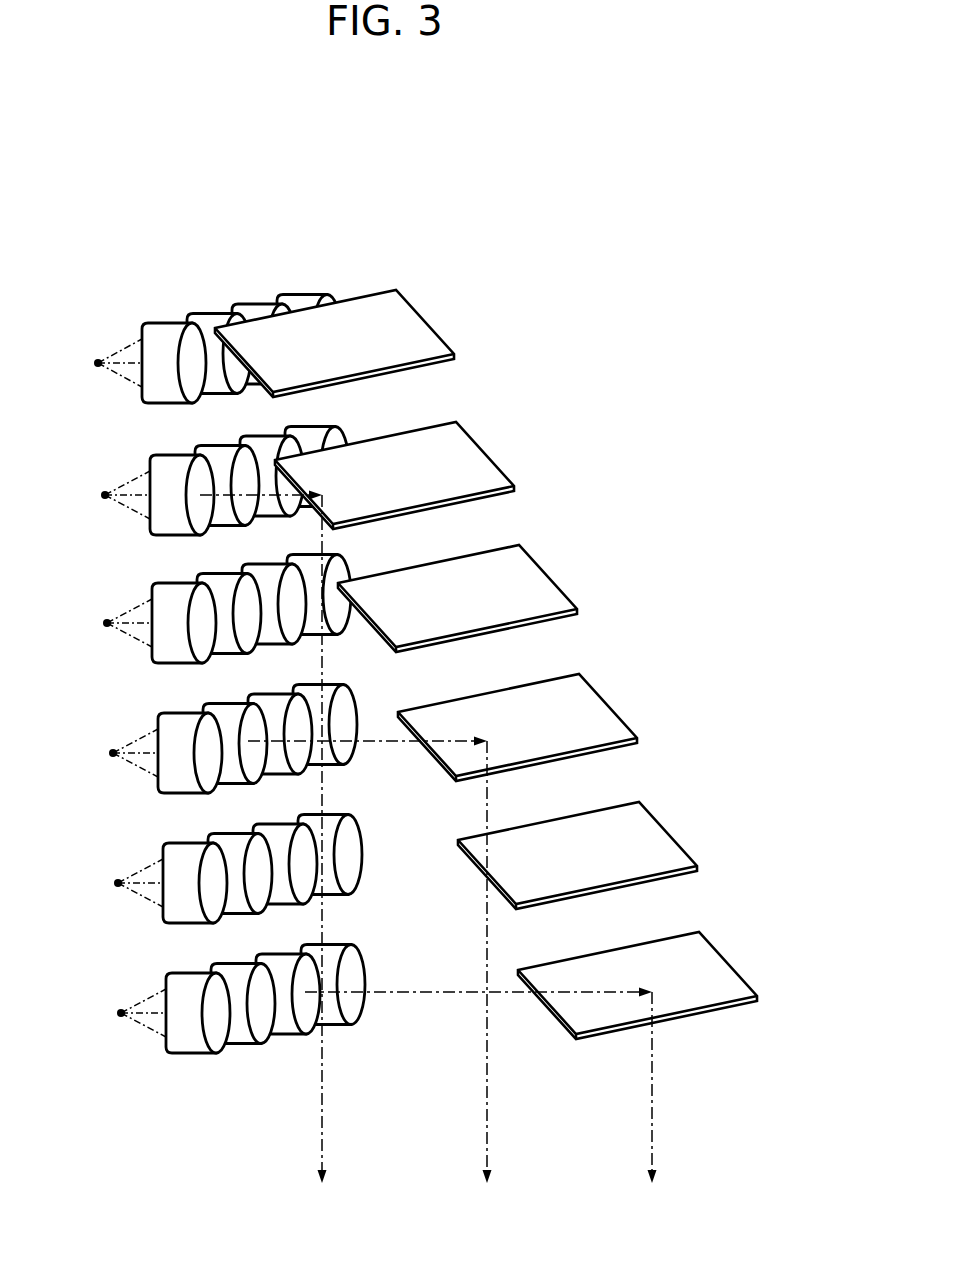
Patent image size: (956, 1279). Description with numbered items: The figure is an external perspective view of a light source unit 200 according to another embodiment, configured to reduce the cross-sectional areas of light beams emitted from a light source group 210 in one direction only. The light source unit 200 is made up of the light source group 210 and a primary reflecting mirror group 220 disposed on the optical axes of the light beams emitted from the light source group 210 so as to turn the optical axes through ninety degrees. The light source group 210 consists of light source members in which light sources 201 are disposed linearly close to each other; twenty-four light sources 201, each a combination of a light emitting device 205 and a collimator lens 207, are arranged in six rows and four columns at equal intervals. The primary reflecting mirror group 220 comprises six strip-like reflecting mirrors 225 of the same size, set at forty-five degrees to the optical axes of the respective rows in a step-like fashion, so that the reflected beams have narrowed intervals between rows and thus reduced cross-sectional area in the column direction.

The light source unit 200 is at (395, 223).
The light source group 210 is at (112, 557).
The light source 201 is at (167, 1110).
The light emitting device 205 is at (120, 1016).
The collimator lens 207 is at (180, 1042).
The primary reflecting mirror group 220 is at (487, 380).
The reflecting mirror 225 is at (527, 582).